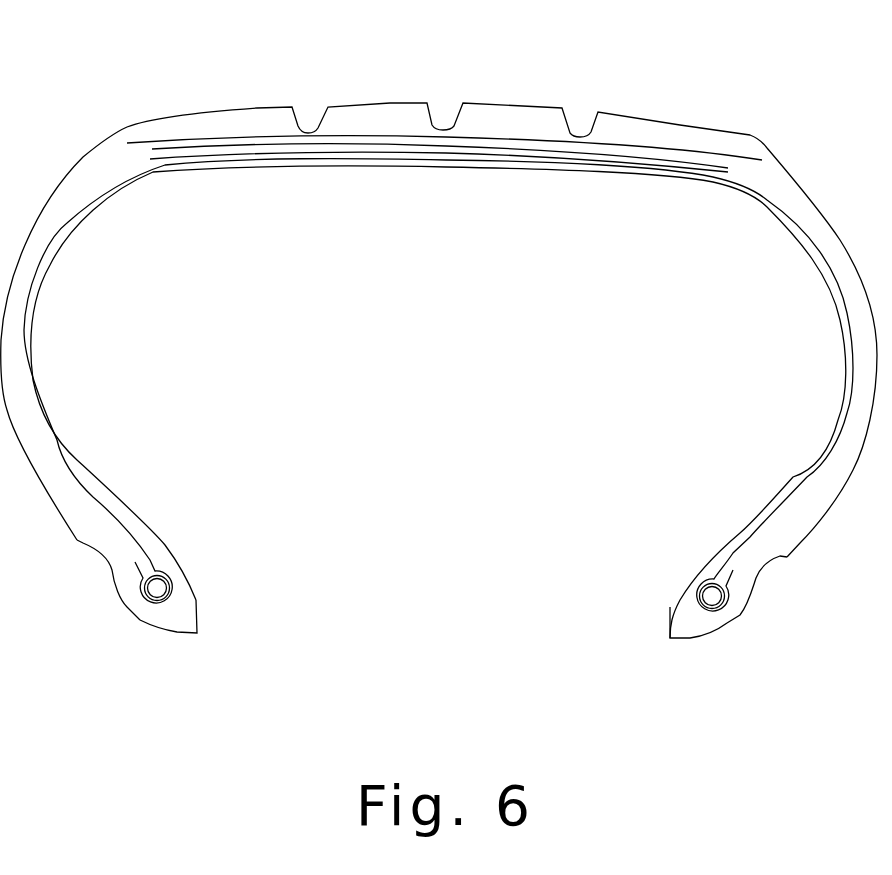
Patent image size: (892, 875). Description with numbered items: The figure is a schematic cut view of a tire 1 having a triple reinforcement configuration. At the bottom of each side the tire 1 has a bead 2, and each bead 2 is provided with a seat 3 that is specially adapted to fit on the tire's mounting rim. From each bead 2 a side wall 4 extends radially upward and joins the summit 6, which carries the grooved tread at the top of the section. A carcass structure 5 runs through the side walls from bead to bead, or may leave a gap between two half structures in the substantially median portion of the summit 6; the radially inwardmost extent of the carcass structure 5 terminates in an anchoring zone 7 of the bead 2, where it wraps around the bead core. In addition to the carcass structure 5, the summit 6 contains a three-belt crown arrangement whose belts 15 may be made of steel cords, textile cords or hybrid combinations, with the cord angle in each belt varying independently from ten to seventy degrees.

The tire 1 is at (185, 70).
The bead 2 is at (193, 597).
The seat 3 is at (172, 633).
The side wall 4 is at (35, 372).
The carcass structure 5 is at (73, 465).
The summit 6 is at (365, 103).
The anchoring zone 7 is at (150, 562).
The belts 15 is at (513, 150).